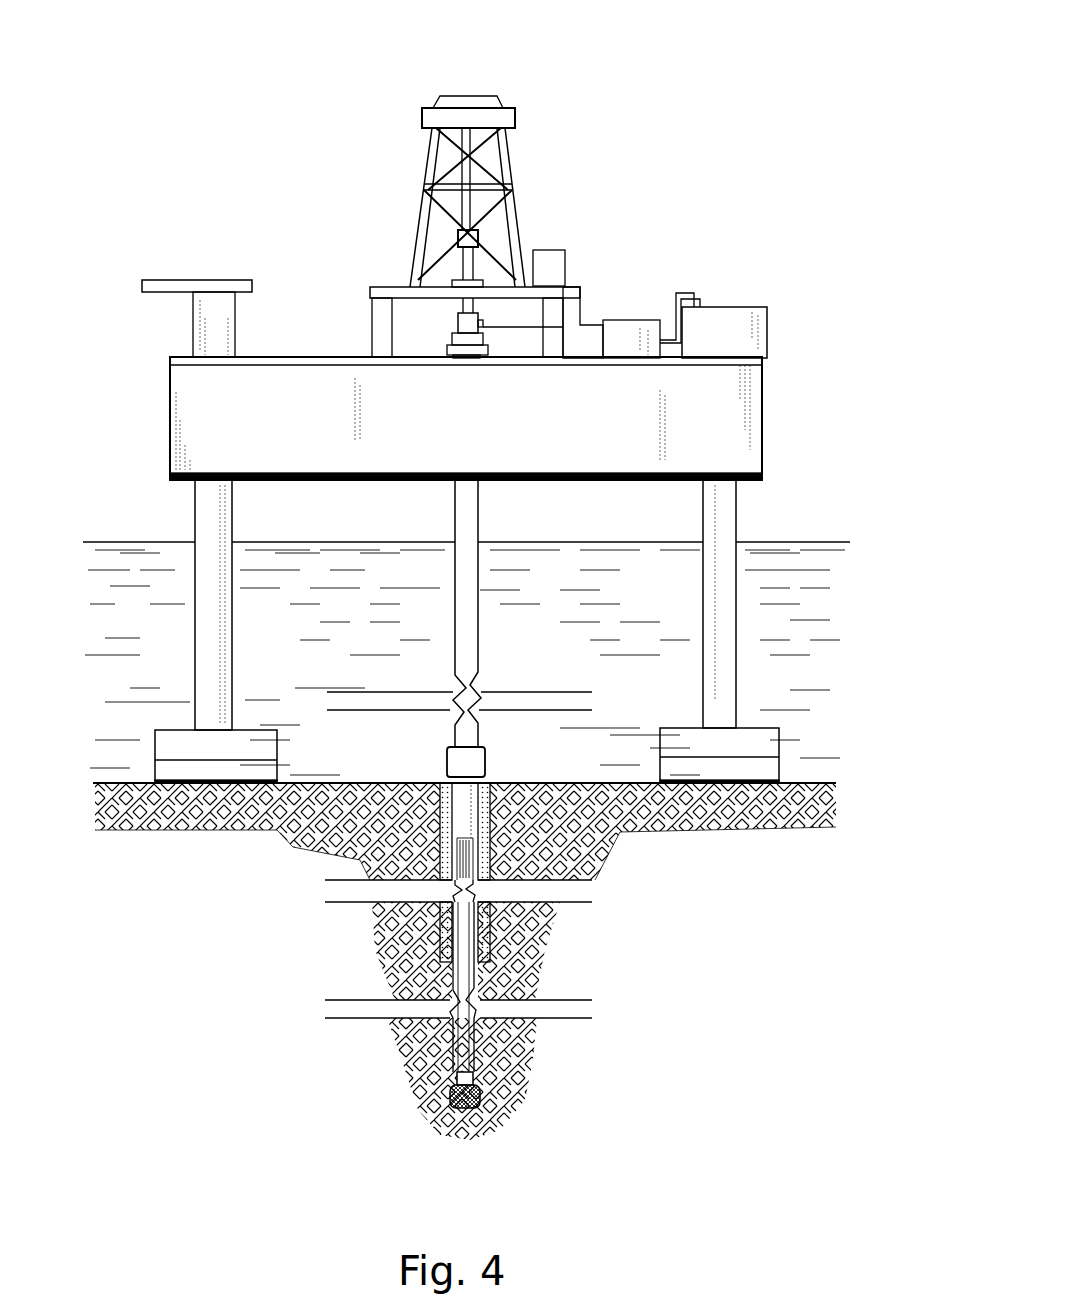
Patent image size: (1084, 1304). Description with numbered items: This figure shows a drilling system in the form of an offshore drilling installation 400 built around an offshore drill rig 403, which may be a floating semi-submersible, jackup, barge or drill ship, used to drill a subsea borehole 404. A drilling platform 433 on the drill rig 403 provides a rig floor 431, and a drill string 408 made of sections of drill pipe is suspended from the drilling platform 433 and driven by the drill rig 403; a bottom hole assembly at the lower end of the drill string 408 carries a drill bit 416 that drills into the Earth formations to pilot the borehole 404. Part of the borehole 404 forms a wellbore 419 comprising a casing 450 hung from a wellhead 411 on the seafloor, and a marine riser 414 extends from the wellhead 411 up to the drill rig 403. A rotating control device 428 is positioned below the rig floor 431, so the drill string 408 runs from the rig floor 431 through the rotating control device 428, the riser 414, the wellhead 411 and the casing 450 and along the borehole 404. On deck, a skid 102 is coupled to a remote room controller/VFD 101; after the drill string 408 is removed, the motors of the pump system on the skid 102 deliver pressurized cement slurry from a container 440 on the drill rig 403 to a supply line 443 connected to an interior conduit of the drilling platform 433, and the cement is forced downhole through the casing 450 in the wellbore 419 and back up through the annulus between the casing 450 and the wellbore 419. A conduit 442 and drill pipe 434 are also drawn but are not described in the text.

The drilling installation 400 is at (711, 66).
The drilling platform 433 is at (521, 152).
The conduit 442 is at (502, 327).
The remote room controller/VFD 101 is at (548, 252).
The supply line 443 is at (578, 290).
The skid 102 is at (628, 318).
The container 440 is at (748, 349).
The rig floor 431 is at (437, 287).
The rotating control device 428 is at (458, 322).
The drill rig 403 is at (168, 402).
The marine riser 414 is at (479, 517).
The wellhead 411 is at (472, 767).
The casing 450 is at (458, 813).
The wellbore 419 is at (489, 847).
The drill string 434 is at (450, 985).
The borehole 404 is at (479, 985).
The drill bit 416 is at (448, 1102).
The drill string 408 is at (467, 1047).